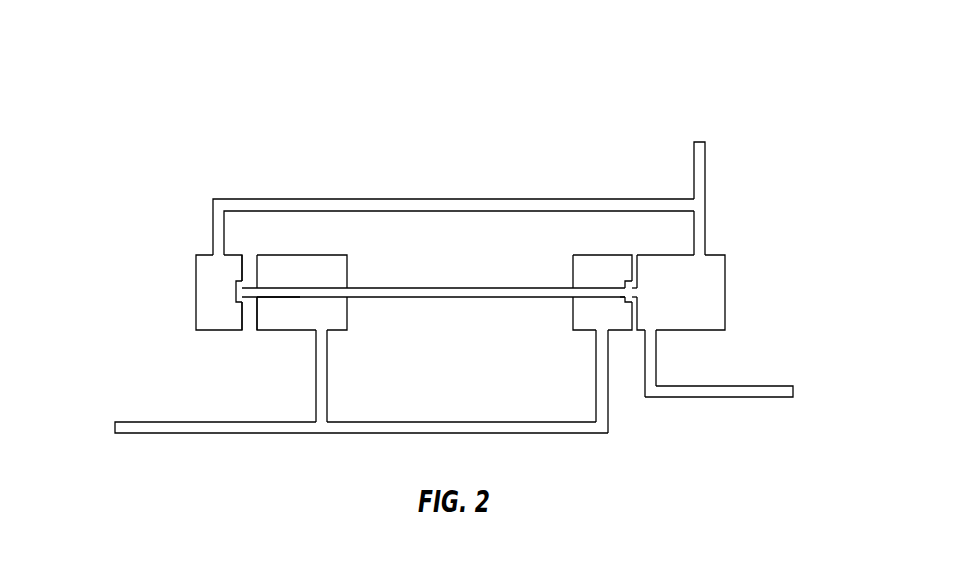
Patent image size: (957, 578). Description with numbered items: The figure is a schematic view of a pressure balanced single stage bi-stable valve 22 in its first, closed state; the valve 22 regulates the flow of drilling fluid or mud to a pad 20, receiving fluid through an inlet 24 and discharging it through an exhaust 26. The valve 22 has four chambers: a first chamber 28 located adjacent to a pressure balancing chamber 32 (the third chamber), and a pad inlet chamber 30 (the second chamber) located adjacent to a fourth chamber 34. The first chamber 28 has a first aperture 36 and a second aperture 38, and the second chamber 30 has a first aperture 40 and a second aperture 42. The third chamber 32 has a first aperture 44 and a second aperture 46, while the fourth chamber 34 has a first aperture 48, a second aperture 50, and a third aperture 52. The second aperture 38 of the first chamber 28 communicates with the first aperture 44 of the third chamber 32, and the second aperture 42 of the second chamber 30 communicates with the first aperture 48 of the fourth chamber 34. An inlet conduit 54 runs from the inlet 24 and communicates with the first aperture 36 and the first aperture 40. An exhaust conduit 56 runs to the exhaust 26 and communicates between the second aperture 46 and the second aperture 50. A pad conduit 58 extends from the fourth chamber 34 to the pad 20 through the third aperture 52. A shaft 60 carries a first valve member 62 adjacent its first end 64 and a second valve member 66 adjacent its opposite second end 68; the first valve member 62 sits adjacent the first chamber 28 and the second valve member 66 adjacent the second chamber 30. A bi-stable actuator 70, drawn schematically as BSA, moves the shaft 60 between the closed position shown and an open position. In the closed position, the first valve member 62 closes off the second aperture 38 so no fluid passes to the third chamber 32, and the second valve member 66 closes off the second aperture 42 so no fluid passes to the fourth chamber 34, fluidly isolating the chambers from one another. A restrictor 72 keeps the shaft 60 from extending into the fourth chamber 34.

The pressure balanced single stage bi-stable valve 22 is at (143, 114).
The pad 20 is at (812, 383).
The inlet 24 is at (83, 415).
The exhaust 26 is at (699, 113).
The first chamber 28 is at (312, 263).
The pad inlet chamber 30 is at (598, 263).
The pressure balancing chamber 32 is at (208, 262).
The fourth chamber 34 is at (717, 293).
The first aperture of first chamber 36 is at (323, 334).
The second aperture of first chamber 38 is at (258, 299).
The first aperture of second chamber 40 is at (598, 334).
The second aperture of second chamber 42 is at (627, 283).
The first aperture of third chamber 44 is at (243, 302).
The second aperture of third chamber 46 is at (219, 254).
The first aperture of fourth chamber 48 is at (639, 300).
The second aperture of fourth chamber 50 is at (700, 253).
The third aperture of fourth chamber 52 is at (652, 335).
The inlet conduit 54 is at (237, 435).
The exhaust conduit 56 is at (707, 172).
The pad conduit 58 is at (720, 400).
The shaft 60 is at (413, 287).
The first valve member 62 is at (236, 292).
The first end of shaft 64 is at (267, 298).
The second valve member 66 is at (637, 292).
The second end of shaft 68 is at (624, 302).
The bi-stable actuator 70 is at (461, 262).
The restrictor 72 is at (632, 283).